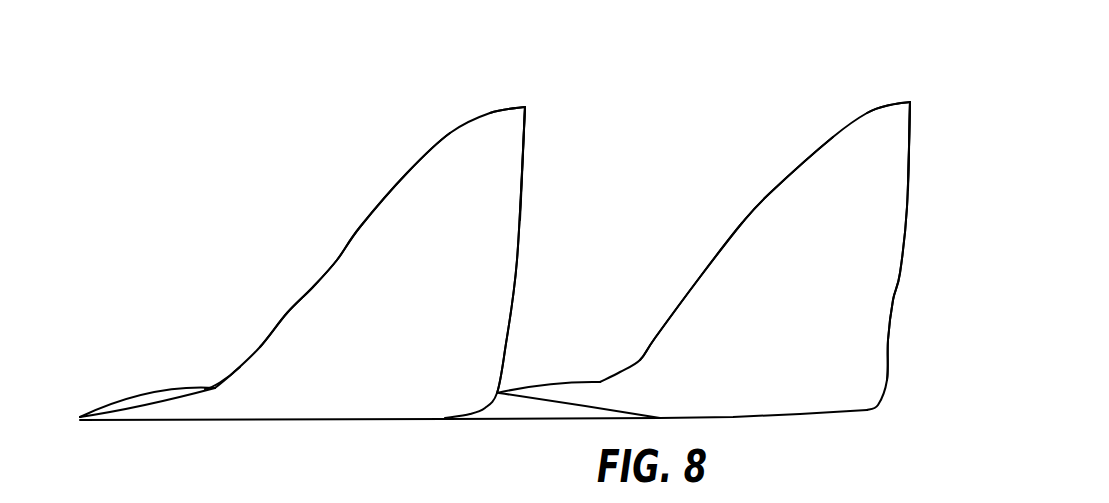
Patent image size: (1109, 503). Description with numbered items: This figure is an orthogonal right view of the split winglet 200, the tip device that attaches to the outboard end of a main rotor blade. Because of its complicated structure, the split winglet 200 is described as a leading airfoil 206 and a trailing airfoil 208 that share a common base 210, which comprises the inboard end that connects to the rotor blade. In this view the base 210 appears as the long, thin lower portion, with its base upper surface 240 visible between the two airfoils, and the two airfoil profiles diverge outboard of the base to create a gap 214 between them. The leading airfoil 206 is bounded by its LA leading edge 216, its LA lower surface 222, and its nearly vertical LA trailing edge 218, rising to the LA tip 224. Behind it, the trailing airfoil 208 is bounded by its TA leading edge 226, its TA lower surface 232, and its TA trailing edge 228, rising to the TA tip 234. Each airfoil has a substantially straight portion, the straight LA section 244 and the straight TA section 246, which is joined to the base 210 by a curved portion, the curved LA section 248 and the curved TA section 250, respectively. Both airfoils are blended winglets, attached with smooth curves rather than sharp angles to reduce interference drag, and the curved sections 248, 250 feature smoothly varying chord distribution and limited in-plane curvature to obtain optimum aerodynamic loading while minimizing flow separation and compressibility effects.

The split winglet 200 is at (526, 250).
The leading airfoil 206 is at (356, 230).
The trailing airfoil 208 is at (741, 222).
The base 210 is at (119, 393).
The gap 214 is at (505, 400).
The LA leading edge 216 is at (284, 323).
The LA trailing edge 218 is at (528, 157).
The LA lower surface 222 is at (322, 278).
The LA tip 224 is at (528, 104).
The TA leading edge 226 is at (700, 280).
The TA trailing edge 228 is at (907, 203).
The TA lower surface 232 is at (880, 300).
The TA tip 234 is at (932, 76).
The base upper surface 240 is at (512, 390).
The straight LA section 244 is at (406, 175).
The straight TA section 246 is at (772, 190).
The curved LA section 248 is at (231, 376).
The curved TA section 250 is at (655, 337).